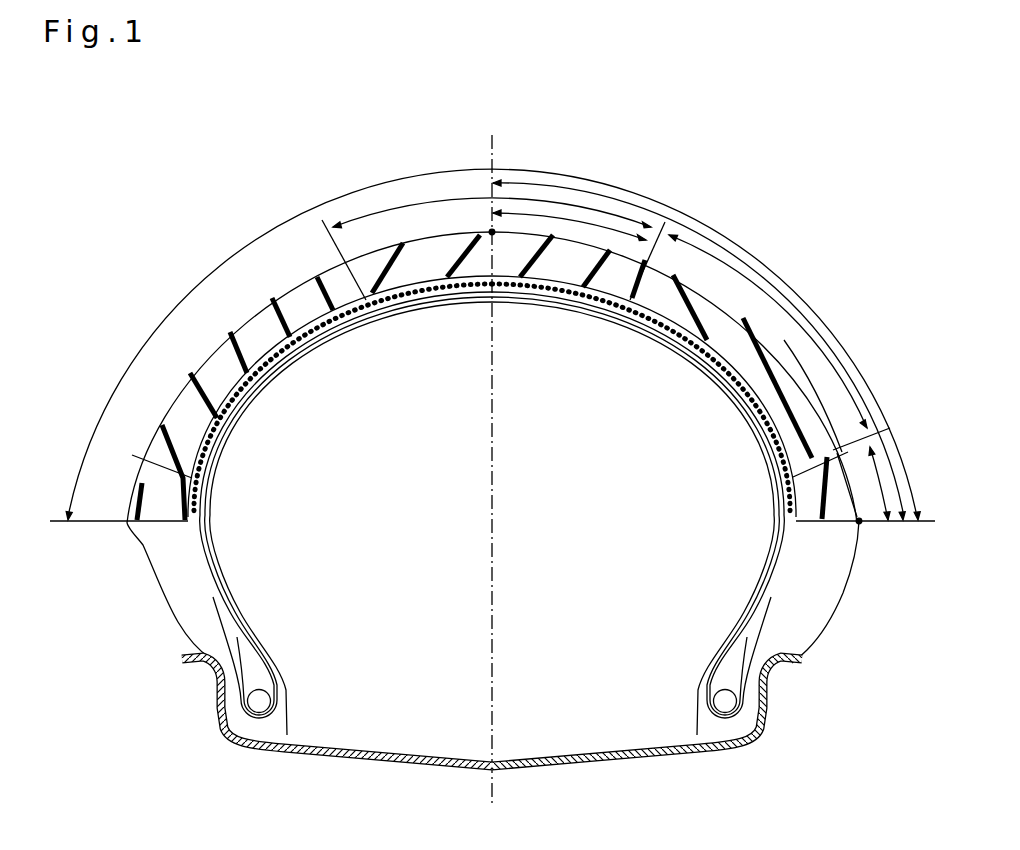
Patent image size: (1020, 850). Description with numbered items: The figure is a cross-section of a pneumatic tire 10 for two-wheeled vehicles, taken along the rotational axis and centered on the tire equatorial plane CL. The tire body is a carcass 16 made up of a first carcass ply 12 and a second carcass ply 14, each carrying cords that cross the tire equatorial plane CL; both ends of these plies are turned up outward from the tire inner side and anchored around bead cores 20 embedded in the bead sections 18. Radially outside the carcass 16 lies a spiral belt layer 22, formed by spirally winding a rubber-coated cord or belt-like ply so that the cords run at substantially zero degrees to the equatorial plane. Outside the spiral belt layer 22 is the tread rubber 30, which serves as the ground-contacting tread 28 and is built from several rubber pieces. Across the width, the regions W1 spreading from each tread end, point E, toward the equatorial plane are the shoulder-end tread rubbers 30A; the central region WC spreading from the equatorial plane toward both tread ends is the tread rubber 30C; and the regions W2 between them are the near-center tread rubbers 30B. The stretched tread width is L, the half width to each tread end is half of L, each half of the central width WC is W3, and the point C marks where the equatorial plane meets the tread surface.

The pneumatic tire 10 is at (213, 140).
The first carcass ply 12 is at (771, 597).
The second carcass ply 14 is at (747, 637).
The carcass 16 is at (889, 613).
The bead section 18 is at (805, 656).
The bead core 20 is at (716, 702).
The spiral belt layer 22 is at (797, 520).
The tread 28 is at (238, 192).
The tread rubber 30 is at (275, 290).
The tread rubber (side-section shoulder-end) 30A is at (155, 482).
The tread rubber (side-section near-center) 30B is at (210, 367).
The tread rubber (tread central section) 30C is at (428, 245).
The point C is at (492, 232).
The tire equatorial plane CL is at (495, 140).
The tread end (point E) E is at (861, 522).
The stretched tread width L is at (662, 200).
The tread central section region WC is at (578, 207).
The side-section shoulder-end region W1 is at (882, 480).
The side-section near-center region W2 is at (788, 313).
The half width of tread rubber 30C W3 is at (553, 218).